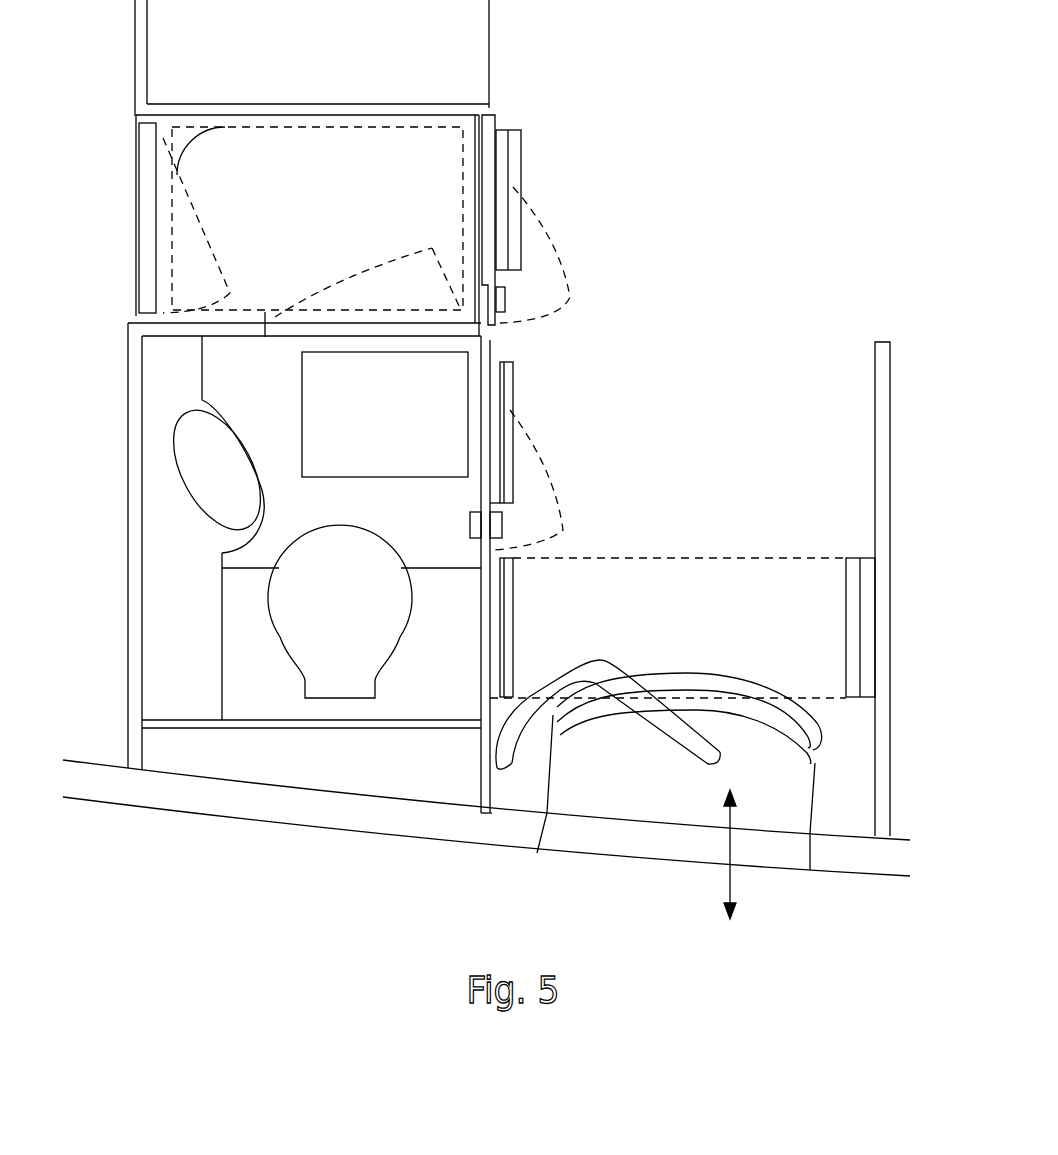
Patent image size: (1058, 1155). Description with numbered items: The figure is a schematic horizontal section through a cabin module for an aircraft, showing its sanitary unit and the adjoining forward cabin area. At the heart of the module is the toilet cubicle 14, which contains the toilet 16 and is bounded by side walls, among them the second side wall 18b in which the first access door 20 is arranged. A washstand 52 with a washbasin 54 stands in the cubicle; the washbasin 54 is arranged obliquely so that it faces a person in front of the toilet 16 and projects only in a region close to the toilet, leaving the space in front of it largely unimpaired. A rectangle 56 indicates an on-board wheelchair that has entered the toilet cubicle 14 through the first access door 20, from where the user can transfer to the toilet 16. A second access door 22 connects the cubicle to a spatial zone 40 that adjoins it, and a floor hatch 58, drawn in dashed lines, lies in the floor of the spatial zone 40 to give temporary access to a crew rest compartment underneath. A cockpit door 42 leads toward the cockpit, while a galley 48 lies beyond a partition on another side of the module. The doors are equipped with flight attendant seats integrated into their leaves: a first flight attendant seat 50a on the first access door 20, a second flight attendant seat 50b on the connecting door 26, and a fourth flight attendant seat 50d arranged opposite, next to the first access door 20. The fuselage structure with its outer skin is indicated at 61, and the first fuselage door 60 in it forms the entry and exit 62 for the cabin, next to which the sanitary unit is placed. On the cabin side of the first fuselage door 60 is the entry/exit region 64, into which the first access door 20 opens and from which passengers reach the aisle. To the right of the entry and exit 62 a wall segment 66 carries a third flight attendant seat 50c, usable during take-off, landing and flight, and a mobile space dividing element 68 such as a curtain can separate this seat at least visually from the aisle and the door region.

The toilet cubicle 14 is at (272, 414).
The toilet 16 is at (315, 680).
The second side wall 18b is at (482, 667).
The first access door 20 is at (473, 495).
The second access door 22 is at (398, 325).
The connecting door 26 is at (488, 205).
The spatial zone 40 is at (300, 222).
The cockpit door 42 is at (142, 231).
The galley 48 is at (460, 40).
The first flight attendant seat 50a is at (507, 412).
The second flight attendant seat 50b is at (513, 188).
The third flight attendant seat 50c is at (846, 600).
The fourth flight attendant seat 50d is at (513, 625).
The washstand 52 is at (187, 578).
The washbasin 54 is at (197, 472).
The rectangle 56 is at (360, 472).
The floor hatch 58 is at (177, 172).
The first fuselage door 60 is at (663, 795).
The fuselage structure 61 is at (352, 820).
The entry and exit 62 is at (730, 887).
The entry/exit region 64 is at (654, 506).
The wall segment 66 is at (890, 382).
The mobile space dividing element 68 is at (738, 558).